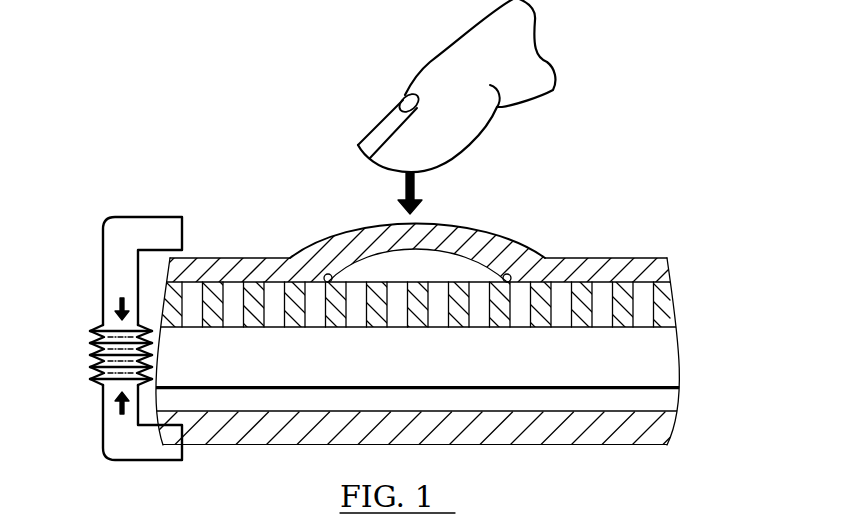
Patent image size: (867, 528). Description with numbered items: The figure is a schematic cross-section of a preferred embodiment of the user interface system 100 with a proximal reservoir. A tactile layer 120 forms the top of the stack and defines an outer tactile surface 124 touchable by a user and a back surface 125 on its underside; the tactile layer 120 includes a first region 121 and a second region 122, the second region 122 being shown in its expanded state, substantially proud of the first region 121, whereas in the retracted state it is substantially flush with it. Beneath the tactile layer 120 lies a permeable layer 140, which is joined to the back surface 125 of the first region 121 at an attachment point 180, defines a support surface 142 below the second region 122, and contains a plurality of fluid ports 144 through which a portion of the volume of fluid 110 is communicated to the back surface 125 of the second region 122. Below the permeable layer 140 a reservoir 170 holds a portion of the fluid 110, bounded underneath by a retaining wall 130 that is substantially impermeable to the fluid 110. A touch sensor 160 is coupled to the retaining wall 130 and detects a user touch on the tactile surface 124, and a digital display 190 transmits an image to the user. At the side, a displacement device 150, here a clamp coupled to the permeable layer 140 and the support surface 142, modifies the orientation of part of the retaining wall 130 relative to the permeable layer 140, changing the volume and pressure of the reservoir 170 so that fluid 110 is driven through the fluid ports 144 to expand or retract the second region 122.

The user interface system 100 is at (118, 170).
The volume of fluid 110 is at (295, 358).
The tactile layer 120 is at (643, 272).
The first region 121 is at (578, 226).
The second region 122 is at (367, 218).
The tactile surface 124 is at (625, 257).
The back surface 125 is at (450, 263).
The retaining wall 130 is at (560, 401).
The permeable layer 140 is at (687, 273).
The support surface 142 is at (417, 283).
The fluid ports 144 is at (275, 293).
The displacement device 150 is at (80, 217).
The touch sensor 160 is at (470, 448).
The reservoir 170 is at (638, 373).
The attachment point 180 is at (328, 273).
The digital display 190 is at (643, 425).